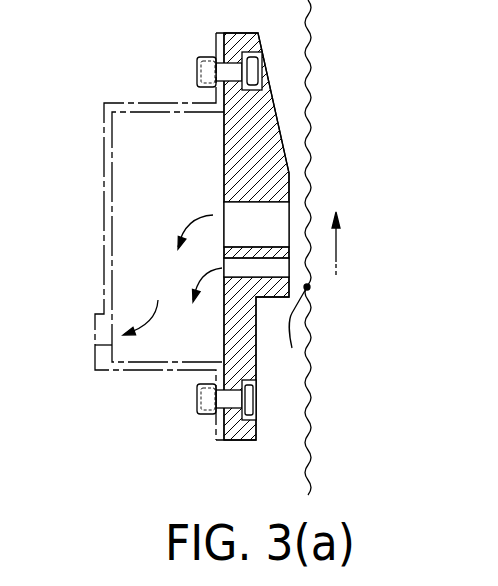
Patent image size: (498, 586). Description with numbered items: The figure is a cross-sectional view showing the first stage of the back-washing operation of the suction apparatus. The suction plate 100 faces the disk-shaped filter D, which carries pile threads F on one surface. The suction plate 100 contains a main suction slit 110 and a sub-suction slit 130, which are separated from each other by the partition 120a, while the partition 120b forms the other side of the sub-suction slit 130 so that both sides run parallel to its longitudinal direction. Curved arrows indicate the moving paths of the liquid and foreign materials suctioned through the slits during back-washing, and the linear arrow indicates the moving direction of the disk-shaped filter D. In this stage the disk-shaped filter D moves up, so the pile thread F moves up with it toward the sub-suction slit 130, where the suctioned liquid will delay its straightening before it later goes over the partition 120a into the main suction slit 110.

The suction plate 100 is at (282, 147).
The main suction slit 110 is at (290, 221).
The sub-suction slit 130 is at (290, 268).
The partition 120a is at (224, 256).
The partition 120b is at (298, 309).
The pile thread F is at (296, 325).
The disk-shaped filter D is at (308, 60).